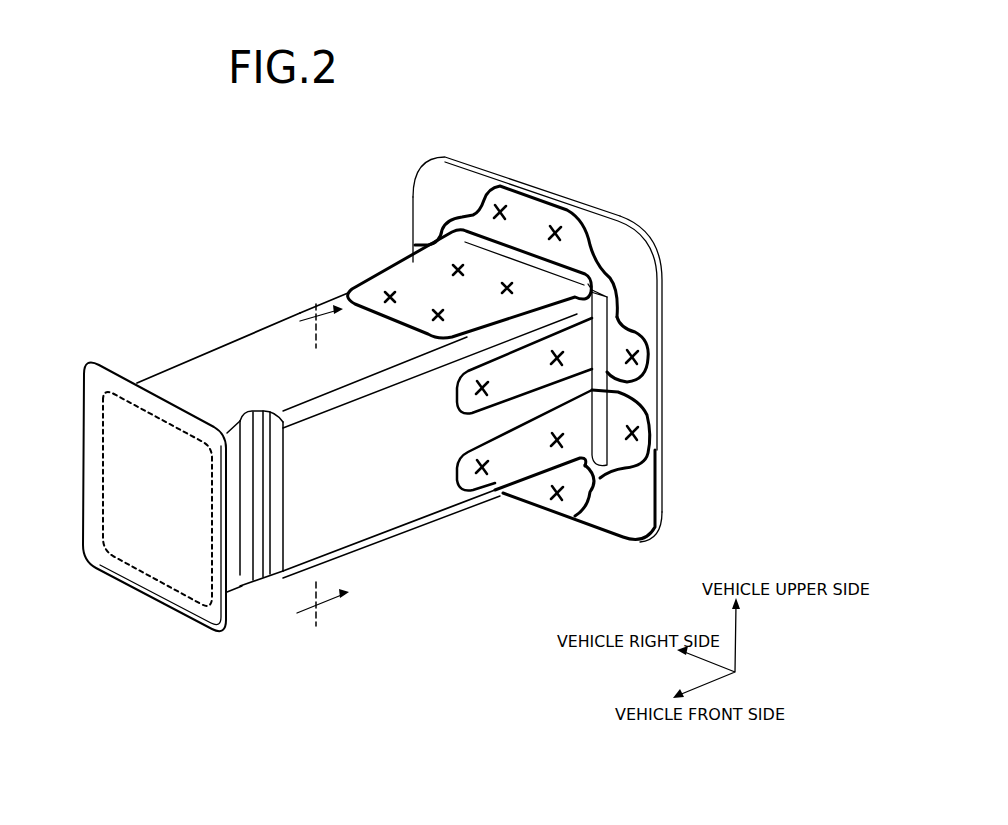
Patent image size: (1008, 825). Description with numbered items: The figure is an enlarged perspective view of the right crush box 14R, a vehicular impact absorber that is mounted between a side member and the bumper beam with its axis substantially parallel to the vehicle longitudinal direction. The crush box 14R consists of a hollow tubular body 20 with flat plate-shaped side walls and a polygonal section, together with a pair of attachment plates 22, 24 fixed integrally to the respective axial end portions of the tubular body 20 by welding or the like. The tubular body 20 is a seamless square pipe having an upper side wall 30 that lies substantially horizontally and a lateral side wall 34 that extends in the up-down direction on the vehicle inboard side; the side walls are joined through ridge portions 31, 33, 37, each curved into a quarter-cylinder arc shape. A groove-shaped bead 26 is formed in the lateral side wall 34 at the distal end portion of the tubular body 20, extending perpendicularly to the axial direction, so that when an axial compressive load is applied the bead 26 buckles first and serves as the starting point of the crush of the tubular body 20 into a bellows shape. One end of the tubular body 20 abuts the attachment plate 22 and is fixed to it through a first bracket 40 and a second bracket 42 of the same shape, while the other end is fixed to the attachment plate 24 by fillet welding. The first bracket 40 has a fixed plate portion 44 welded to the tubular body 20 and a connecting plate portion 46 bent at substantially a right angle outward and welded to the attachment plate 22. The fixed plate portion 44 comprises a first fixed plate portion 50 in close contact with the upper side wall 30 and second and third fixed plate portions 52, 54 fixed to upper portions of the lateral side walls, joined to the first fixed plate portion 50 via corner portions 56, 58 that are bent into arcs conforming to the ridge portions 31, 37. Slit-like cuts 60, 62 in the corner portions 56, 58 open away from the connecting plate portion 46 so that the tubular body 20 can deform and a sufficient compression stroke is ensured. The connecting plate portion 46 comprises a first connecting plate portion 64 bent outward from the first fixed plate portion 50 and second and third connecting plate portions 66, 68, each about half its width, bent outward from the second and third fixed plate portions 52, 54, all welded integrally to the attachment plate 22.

The right crush box 14R is at (175, 193).
The tubular body 20 is at (410, 548).
The attachment plate 22 is at (468, 172).
The attachment plate 24 is at (143, 582).
The bead 26 is at (259, 545).
The upper side wall 30 is at (240, 353).
The ridge portion 31 is at (298, 412).
The ridge portion 33 is at (372, 537).
The lateral side wall 34 is at (423, 492).
The ridge portion 37 is at (177, 362).
The first bracket 40 is at (632, 258).
The second bracket 42 is at (582, 533).
The fixed plate portion 44 is at (338, 284).
The connecting plate portion 46 is at (433, 218).
The first fixed plate portion 50 is at (397, 277).
The second fixed plate portion 52 is at (507, 378).
The third fixed plate portion 54 is at (512, 457).
The corner portion 56 is at (615, 290).
The corner portion 58 is at (600, 473).
The cut 60 is at (615, 323).
The cut 62 is at (495, 497).
The first connecting plate portion 64 is at (535, 208).
The second connecting plate portion 66 is at (643, 360).
The third connecting plate portion 68 is at (640, 437).